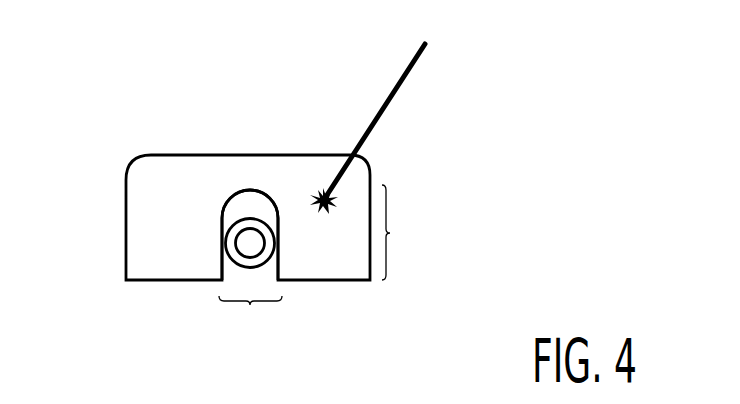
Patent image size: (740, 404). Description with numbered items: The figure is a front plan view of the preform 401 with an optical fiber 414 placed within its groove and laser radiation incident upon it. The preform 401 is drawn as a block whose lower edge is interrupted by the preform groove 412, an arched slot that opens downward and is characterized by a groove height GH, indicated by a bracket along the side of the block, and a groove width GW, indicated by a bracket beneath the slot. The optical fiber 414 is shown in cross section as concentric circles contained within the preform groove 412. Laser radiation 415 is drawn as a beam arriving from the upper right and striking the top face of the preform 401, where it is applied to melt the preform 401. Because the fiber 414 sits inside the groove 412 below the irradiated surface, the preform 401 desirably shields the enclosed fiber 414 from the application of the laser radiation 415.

The preform 401 is at (311, 152).
The preform groove 412 is at (250, 194).
The optical fiber 414 is at (243, 268).
The laser radiation 415 is at (372, 138).
The groove width GW is at (250, 316).
The groove height GH is at (402, 232).